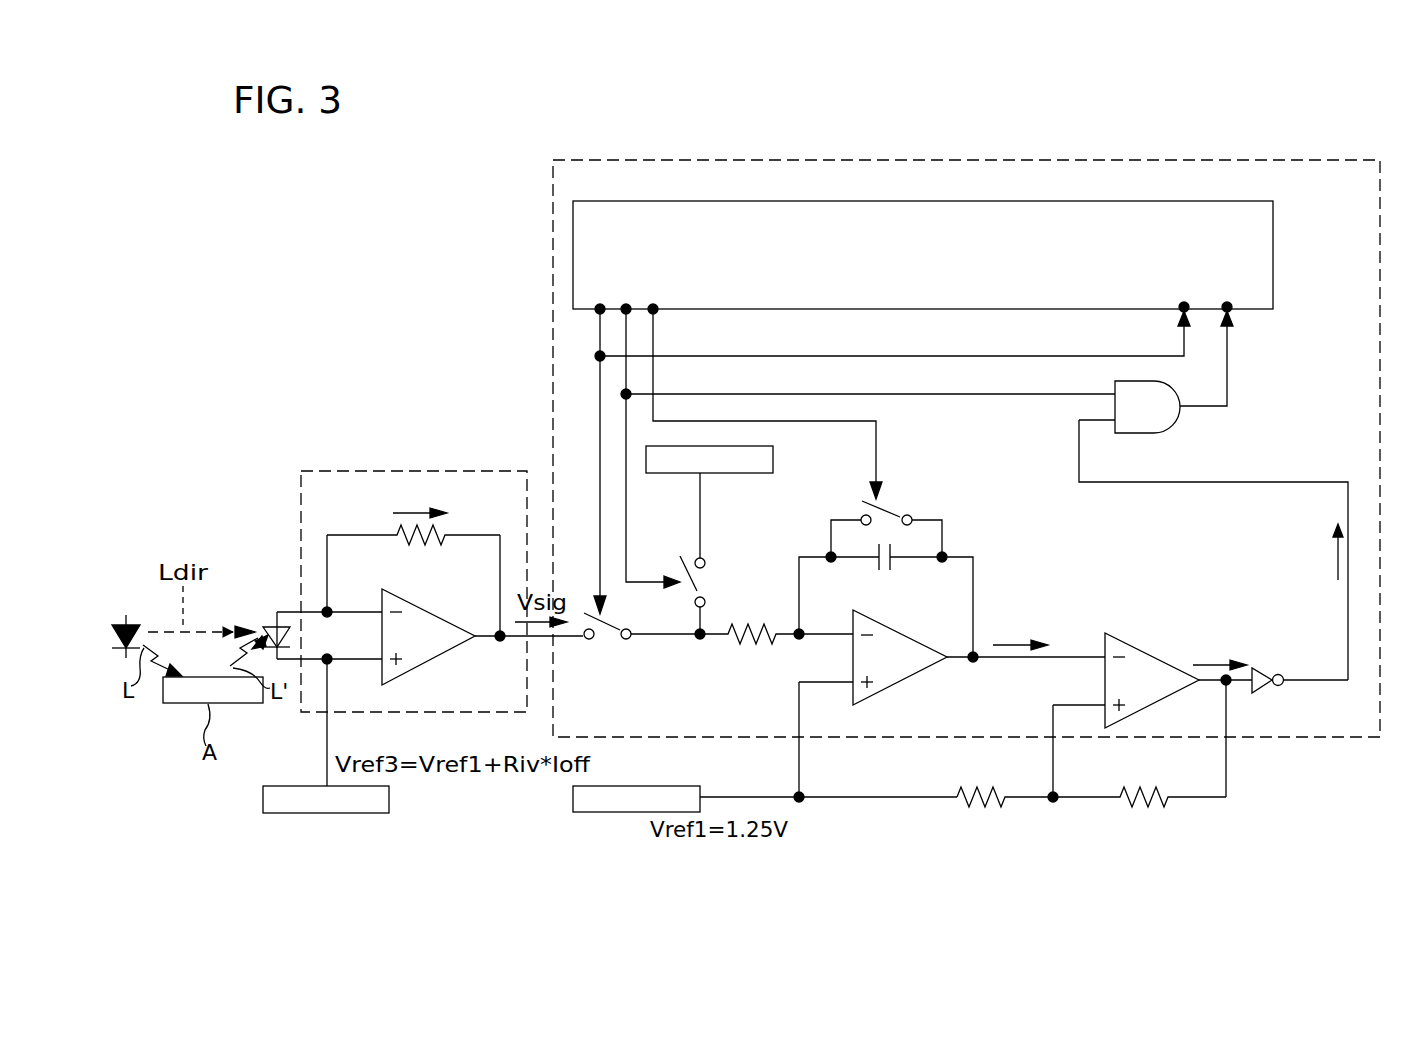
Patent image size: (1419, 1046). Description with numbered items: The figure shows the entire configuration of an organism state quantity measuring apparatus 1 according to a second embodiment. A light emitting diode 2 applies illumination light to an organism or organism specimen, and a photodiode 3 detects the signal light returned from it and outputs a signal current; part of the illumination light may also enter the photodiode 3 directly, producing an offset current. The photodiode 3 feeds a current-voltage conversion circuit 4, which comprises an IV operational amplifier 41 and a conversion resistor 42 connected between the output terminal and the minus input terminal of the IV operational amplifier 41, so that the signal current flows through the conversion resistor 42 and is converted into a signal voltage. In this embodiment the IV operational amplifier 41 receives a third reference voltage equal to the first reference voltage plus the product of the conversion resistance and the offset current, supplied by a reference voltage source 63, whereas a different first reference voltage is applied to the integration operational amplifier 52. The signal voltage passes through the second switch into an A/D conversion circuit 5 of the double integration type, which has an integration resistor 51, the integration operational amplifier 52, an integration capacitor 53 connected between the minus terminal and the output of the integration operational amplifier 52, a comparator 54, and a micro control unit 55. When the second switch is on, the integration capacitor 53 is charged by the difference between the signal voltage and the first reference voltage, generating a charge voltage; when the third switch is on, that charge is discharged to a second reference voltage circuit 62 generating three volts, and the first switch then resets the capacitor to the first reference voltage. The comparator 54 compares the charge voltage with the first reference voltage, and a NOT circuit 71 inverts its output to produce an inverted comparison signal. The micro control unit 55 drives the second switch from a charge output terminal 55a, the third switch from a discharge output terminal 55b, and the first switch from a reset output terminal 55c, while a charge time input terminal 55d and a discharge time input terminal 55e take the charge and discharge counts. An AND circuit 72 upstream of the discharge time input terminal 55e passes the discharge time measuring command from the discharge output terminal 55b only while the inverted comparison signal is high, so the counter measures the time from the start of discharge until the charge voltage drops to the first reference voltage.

The organism state quantity measuring apparatus 1 is at (523, 170).
The light emitting diode 2 is at (118, 623).
The photodiode 3 is at (274, 624).
The current-voltage conversion circuit 4 is at (331, 470).
The A/D conversion circuit 5 is at (553, 226).
The IV operational amplifier 41 is at (430, 608).
The conversion resistor 42 is at (400, 534).
The integration resistor 51 is at (752, 648).
The integration operational amplifier 52 is at (920, 678).
The integration capacitor 53 is at (888, 572).
The comparator 54 is at (1137, 645).
The micro control unit 55 is at (1160, 200).
The charge output terminal 55a is at (600, 303).
The discharge output terminal 55b is at (626, 303).
The reset output terminal 55c is at (656, 306).
The charge time input terminal 55d is at (1182, 302).
The discharge time input terminal 55e is at (1227, 302).
The second reference voltage circuit 62 is at (774, 458).
The reference voltage source Vref3 63 is at (390, 798).
The NOT circuit 71 is at (1265, 665).
The AND circuit 72 is at (1178, 425).